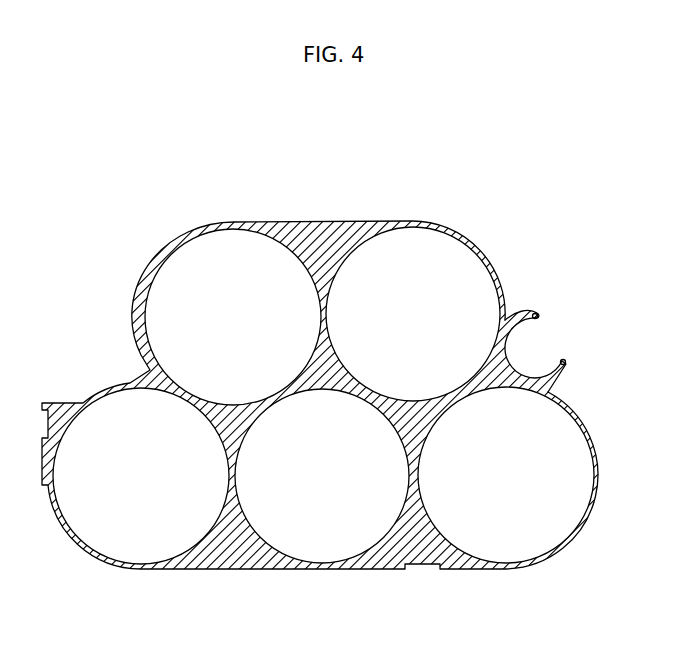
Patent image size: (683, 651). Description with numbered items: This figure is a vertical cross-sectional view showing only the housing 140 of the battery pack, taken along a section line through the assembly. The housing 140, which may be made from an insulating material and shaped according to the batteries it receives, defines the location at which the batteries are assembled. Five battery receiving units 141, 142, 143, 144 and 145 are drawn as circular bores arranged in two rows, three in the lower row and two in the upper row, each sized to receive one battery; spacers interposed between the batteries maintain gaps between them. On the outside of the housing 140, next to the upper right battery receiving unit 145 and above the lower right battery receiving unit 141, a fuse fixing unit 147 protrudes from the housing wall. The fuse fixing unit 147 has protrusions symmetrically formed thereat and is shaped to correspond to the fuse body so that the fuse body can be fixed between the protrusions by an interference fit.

The housing 140 is at (428, 178).
The battery receiving unit 141 is at (510, 560).
The battery receiving unit 142 is at (326, 560).
The battery receiving unit 143 is at (145, 566).
The battery receiving unit 144 is at (156, 266).
The battery receiving unit 145 is at (482, 262).
The fuse fixing unit 147 is at (565, 361).